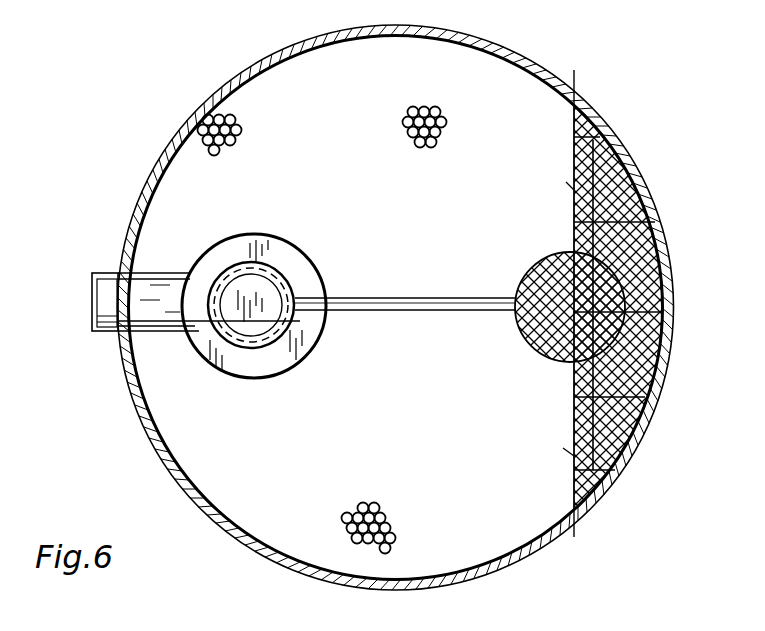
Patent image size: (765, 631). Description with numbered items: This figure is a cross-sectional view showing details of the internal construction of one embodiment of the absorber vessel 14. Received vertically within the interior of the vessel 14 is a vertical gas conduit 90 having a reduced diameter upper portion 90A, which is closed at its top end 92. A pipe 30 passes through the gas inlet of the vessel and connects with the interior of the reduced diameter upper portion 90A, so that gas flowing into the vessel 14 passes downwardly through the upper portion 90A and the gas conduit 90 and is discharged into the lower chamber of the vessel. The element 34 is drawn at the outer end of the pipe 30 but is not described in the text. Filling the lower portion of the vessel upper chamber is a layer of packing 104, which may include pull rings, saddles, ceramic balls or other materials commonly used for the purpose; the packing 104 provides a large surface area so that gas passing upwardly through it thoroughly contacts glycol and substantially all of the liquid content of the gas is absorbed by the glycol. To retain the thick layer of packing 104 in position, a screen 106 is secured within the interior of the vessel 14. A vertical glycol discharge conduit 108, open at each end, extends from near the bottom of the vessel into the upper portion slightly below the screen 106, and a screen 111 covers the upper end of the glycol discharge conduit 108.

The absorber vessel 14 is at (492, 47).
The pipe 30 is at (107, 330).
The plug 34 is at (108, 290).
The vertical gas conduit 90 is at (298, 348).
The reduced diameter upper portion 90A is at (282, 292).
The top end 92 is at (247, 273).
The packing 104 is at (190, 138).
The screen 106 is at (640, 168).
The glycol discharge conduit 108 is at (523, 328).
The screen 111 is at (546, 264).